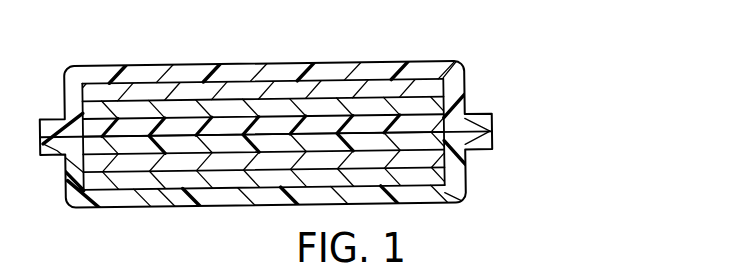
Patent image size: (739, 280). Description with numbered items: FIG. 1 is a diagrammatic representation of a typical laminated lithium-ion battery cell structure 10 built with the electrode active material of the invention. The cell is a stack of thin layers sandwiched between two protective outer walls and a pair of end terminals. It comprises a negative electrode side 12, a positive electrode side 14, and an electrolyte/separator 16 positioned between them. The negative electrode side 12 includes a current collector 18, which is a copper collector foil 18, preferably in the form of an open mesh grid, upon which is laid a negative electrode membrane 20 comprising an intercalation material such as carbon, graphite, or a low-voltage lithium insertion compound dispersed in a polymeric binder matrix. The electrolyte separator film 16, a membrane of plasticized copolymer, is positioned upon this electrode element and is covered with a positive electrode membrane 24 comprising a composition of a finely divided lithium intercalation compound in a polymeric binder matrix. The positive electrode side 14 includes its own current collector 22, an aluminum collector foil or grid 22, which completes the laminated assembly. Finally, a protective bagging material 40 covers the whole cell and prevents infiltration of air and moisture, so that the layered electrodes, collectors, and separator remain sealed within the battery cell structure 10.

The laminated battery cell structure 10 is at (572, 84).
The negative electrode side 12 is at (143, 78).
The positive electrode side 14 is at (170, 207).
The electrolyte/separator 16 is at (446, 96).
The current collector 18 is at (197, 88).
The negative electrode membrane 20 is at (110, 107).
The current collector 22 is at (95, 168).
The positive electrode membrane 24 is at (463, 162).
The protective bagging material 40 is at (450, 203).